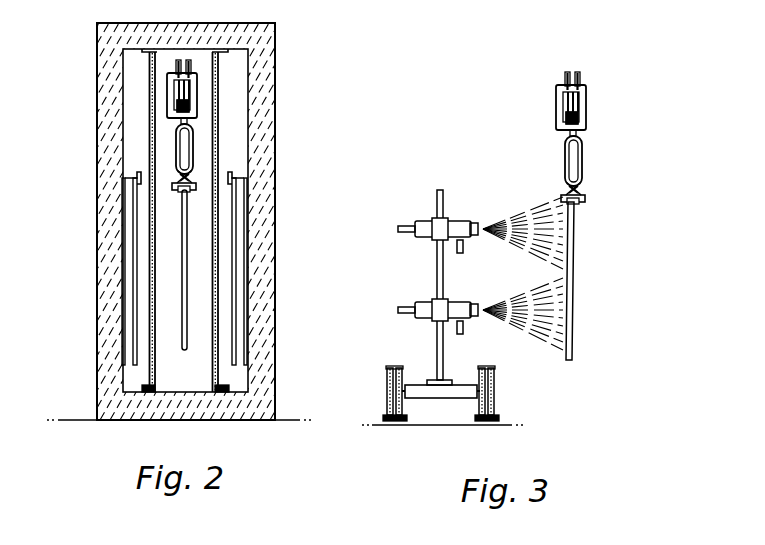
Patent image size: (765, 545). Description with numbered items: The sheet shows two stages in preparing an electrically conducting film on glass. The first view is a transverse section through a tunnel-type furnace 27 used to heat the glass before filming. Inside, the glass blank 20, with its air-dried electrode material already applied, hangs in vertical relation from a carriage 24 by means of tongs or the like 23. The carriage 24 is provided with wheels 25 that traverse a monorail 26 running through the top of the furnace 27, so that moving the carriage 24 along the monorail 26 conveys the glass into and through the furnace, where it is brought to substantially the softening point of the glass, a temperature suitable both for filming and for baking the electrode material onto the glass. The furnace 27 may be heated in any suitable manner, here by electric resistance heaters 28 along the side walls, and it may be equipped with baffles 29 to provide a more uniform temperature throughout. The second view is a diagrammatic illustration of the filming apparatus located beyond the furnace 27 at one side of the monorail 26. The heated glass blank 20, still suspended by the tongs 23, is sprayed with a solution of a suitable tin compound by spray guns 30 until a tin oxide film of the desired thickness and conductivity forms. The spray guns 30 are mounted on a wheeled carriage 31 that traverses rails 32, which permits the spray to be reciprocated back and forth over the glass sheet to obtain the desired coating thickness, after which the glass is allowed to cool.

In FIG. 2, the glass blank 20 is at (187, 255).
In FIG. 3, the glass blank 20 is at (575, 250).
In FIG. 2, the tongs 23 is at (193, 149).
In FIG. 3, the tongs 23 is at (583, 165).
In FIG. 2, the carriage 24 is at (200, 98).
In FIG. 3, the carriage 24 is at (590, 112).
In FIG. 2, the wheels 25 is at (193, 67).
In FIG. 3, the wheels 25 is at (590, 79).
In FIG. 2, the monorail 26 is at (170, 100).
In FIG. 3, the monorail 26 is at (557, 116).
In FIG. 2, the tunnel-type furnace 27 is at (100, 207).
In FIG. 2, the electric resistance heaters 28 is at (125, 278).
In FIG. 2, the baffles 29 is at (152, 319).
In FIG. 3, the spray guns 30 is at (460, 228).
In FIG. 3, the wheeled carriage 31 is at (420, 387).
In FIG. 3, the rails 32 is at (392, 420).